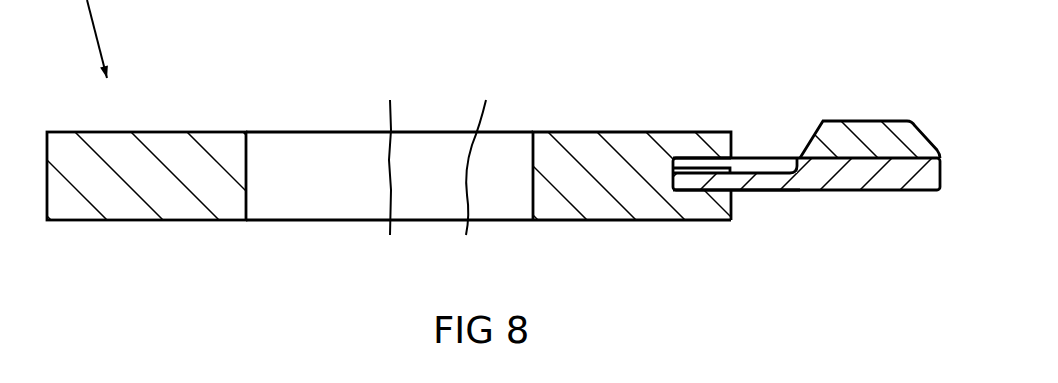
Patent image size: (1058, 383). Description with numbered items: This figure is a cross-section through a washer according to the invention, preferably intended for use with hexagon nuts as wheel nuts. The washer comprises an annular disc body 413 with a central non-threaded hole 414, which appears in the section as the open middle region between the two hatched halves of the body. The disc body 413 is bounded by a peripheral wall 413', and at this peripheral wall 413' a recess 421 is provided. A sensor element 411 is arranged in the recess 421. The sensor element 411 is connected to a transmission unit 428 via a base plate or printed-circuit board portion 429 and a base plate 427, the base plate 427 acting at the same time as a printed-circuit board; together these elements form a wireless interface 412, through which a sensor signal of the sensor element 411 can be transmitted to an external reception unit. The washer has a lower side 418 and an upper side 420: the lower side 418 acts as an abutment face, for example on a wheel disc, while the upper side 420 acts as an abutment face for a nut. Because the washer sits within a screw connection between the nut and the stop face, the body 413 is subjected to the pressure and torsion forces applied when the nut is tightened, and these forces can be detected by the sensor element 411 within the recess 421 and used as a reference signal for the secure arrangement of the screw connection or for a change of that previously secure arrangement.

The sensor element 411 is at (700, 166).
The wireless interface 412 is at (852, 178).
The annular disc body 413 is at (150, 191).
The peripheral wall 413' is at (779, 87).
The central non-threaded hole 414 is at (308, 168).
The lower side 418 is at (598, 221).
The upper side 420 is at (588, 132).
The recess 421 is at (687, 158).
The base plate 427 is at (890, 172).
The transmission unit 428 is at (835, 133).
The printed-circuit board portion 429 is at (776, 182).